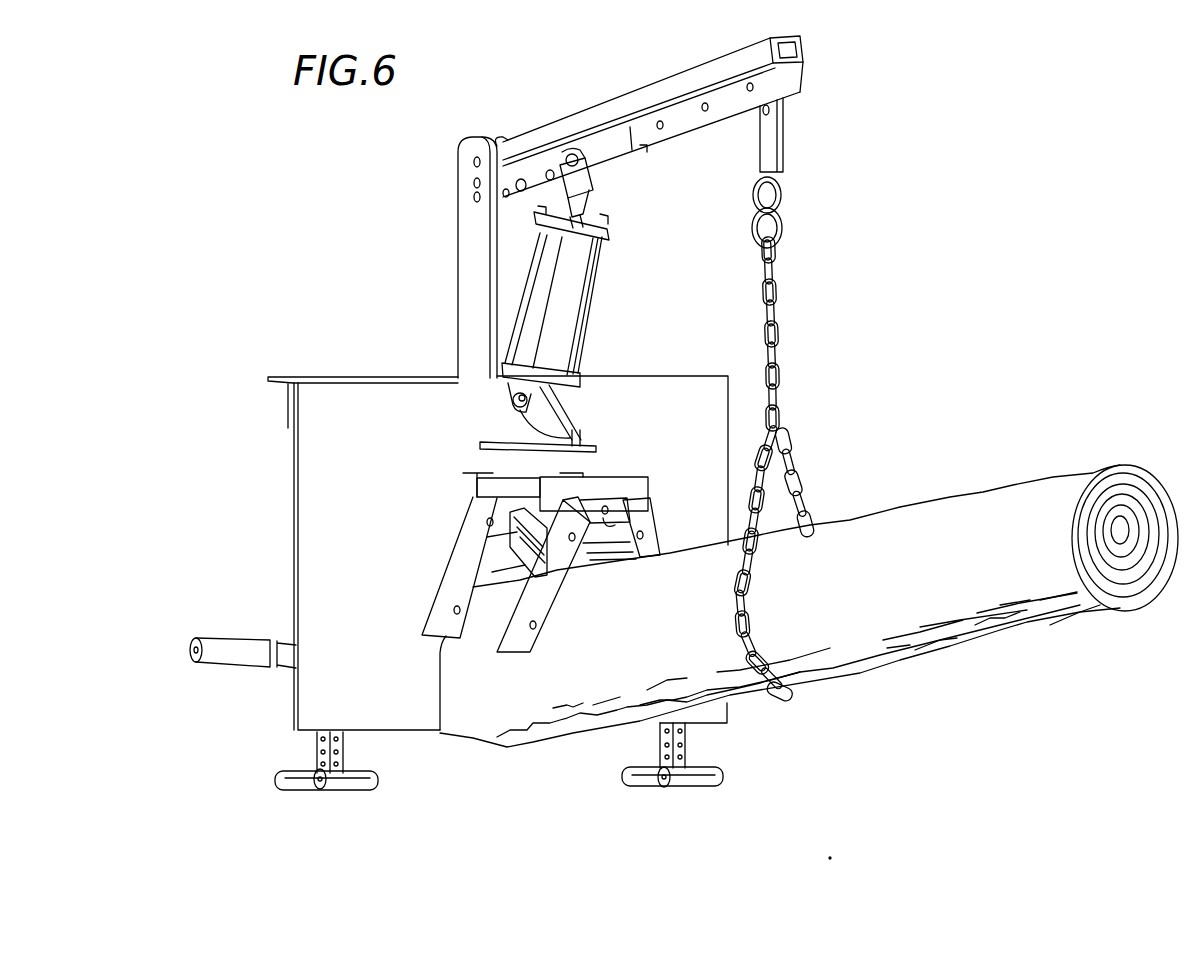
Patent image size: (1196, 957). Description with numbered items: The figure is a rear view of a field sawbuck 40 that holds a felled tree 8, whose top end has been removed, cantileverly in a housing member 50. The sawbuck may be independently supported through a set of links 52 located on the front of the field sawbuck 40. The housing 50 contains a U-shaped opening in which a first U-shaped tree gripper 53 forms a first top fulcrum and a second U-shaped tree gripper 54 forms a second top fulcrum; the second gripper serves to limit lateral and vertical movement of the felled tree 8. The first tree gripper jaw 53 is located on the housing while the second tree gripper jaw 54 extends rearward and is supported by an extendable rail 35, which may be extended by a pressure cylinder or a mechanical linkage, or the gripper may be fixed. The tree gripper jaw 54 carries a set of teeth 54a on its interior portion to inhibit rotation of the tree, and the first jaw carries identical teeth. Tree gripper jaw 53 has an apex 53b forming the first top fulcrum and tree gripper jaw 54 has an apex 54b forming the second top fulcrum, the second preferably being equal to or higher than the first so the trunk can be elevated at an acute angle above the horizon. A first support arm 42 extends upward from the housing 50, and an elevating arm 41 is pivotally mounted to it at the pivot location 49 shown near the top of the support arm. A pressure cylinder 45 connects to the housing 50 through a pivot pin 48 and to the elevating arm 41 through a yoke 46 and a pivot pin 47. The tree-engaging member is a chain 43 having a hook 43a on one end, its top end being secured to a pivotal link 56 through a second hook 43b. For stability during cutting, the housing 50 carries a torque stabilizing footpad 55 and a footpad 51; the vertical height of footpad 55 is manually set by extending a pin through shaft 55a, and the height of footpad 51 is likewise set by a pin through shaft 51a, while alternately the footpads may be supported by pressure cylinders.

The felled tree 8 is at (985, 513).
The extendable rail 35 is at (512, 480).
The field sawbuck 40 is at (937, 188).
The elevating arm 41 is at (657, 95).
The first support arm 42 is at (470, 265).
The chain 43 is at (783, 340).
The hook 43a is at (798, 452).
The second hook 43b is at (787, 256).
The pressure cylinder 45 is at (578, 298).
The yoke 46 is at (595, 187).
The pivot pin 47 is at (568, 156).
The pivot pin 48 is at (573, 432).
The adjustment holes 49 is at (471, 162).
The housing member 50 is at (317, 468).
The footpad 51 is at (683, 785).
The shaft 51a is at (690, 745).
The links 52 is at (243, 648).
The first U-shaped tree gripper 53 is at (455, 556).
The apex 53b is at (493, 518).
The second U-shaped tree gripper 54 is at (530, 598).
The set of teeth 54a is at (633, 547).
The apex 54b is at (620, 522).
The torque stabilizing footpad 55 is at (357, 790).
The shaft 55a is at (315, 744).
The pivotal link 56 is at (784, 153).